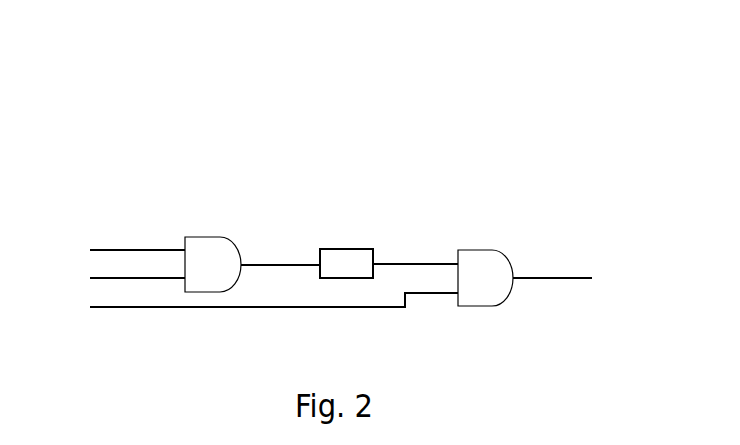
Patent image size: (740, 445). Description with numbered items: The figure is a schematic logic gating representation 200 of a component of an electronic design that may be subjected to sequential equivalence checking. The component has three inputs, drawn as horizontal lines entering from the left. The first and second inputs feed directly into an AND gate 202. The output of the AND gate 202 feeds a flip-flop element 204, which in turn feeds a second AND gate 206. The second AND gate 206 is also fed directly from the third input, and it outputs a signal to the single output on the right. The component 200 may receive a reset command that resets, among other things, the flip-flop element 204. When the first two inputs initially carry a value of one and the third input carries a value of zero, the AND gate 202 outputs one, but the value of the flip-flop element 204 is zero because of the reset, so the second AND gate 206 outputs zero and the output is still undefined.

The logic gating representation 200 is at (508, 123).
The AND gate 202 is at (213, 237).
The flip-flop element 204 is at (352, 249).
The second AND gate 206 is at (491, 250).